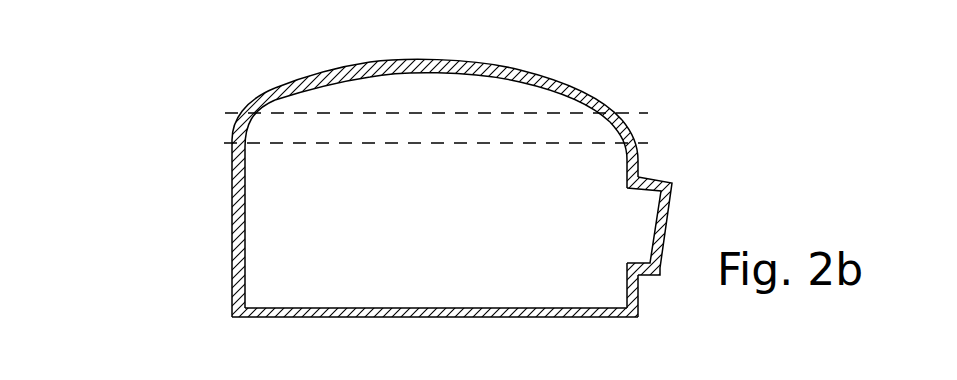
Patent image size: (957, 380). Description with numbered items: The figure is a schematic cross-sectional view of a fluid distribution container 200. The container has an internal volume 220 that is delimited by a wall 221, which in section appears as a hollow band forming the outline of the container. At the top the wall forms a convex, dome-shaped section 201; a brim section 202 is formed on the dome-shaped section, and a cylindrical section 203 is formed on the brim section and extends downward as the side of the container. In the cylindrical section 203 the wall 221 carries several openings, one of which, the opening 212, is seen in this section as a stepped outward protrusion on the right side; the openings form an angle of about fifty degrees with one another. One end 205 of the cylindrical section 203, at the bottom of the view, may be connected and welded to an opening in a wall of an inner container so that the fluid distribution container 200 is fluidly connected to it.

The fluid distribution container 200 is at (153, 77).
The convex, dome-shaped section 201 is at (302, 77).
The brim section 202 is at (233, 128).
The cylindrical section 203 is at (233, 188).
The end of the cylindrical section 205 is at (285, 340).
The opening 212 is at (674, 208).
The internal volume 220 is at (453, 84).
The wall 221 is at (543, 75).